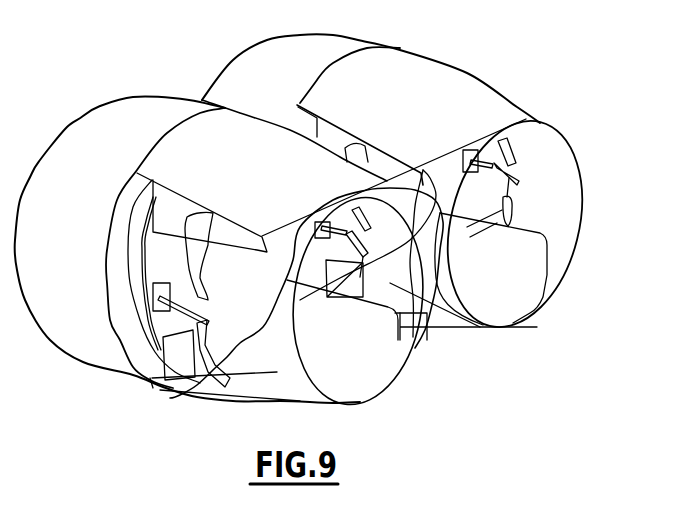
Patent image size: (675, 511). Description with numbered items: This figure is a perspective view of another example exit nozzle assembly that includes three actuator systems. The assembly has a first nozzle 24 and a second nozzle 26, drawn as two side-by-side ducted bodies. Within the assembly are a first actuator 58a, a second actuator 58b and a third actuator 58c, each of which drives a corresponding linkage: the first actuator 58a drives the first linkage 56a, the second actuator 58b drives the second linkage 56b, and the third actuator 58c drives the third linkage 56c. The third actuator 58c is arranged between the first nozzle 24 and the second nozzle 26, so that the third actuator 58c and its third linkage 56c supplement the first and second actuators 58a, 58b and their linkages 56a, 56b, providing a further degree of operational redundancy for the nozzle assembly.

The first nozzle 24 is at (427, 192).
The second nozzle 26 is at (270, 274).
The first linkage 56a is at (225, 312).
The second linkage 56b is at (541, 203).
The third linkage 56c is at (375, 242).
The first actuator 58a is at (160, 300).
The second actuator 58b is at (322, 225).
The third actuator 58c is at (473, 163).